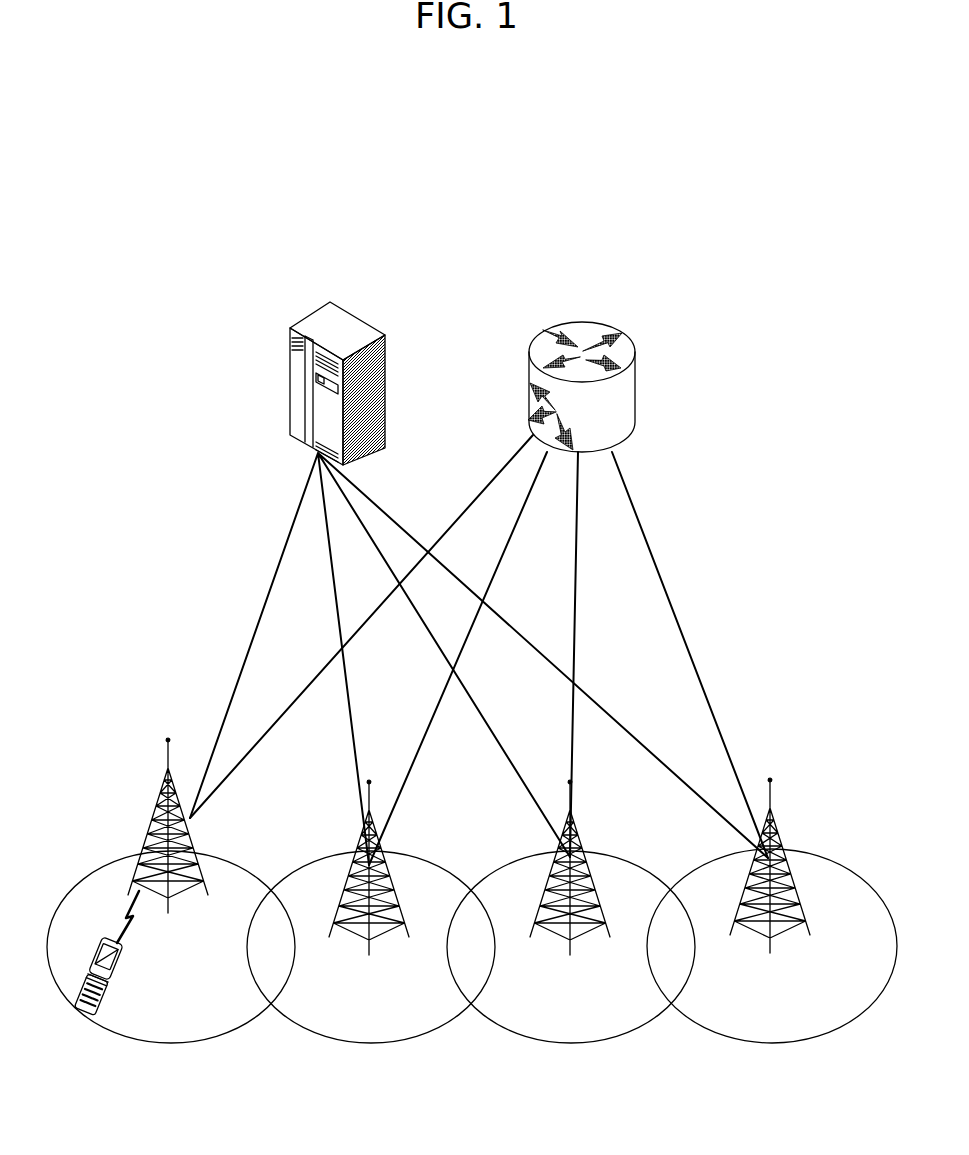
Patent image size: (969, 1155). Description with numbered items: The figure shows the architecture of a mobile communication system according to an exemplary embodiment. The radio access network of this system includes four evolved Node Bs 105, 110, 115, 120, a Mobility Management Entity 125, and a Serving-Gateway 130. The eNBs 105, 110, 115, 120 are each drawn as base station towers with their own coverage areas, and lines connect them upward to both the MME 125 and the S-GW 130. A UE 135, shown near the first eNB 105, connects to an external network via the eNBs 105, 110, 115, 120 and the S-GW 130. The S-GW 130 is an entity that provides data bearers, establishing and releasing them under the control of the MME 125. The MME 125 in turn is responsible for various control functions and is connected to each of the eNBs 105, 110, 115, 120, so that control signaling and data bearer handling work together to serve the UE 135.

The evolved Node B 105 is at (157, 799).
The evolved Node B 110 is at (360, 826).
The evolved Node B 115 is at (578, 832).
The evolved Node B 120 is at (780, 828).
The Mobility Management Entity 125 is at (322, 322).
The Serving-Gateway 130 is at (578, 330).
The user equipment 135 is at (117, 978).